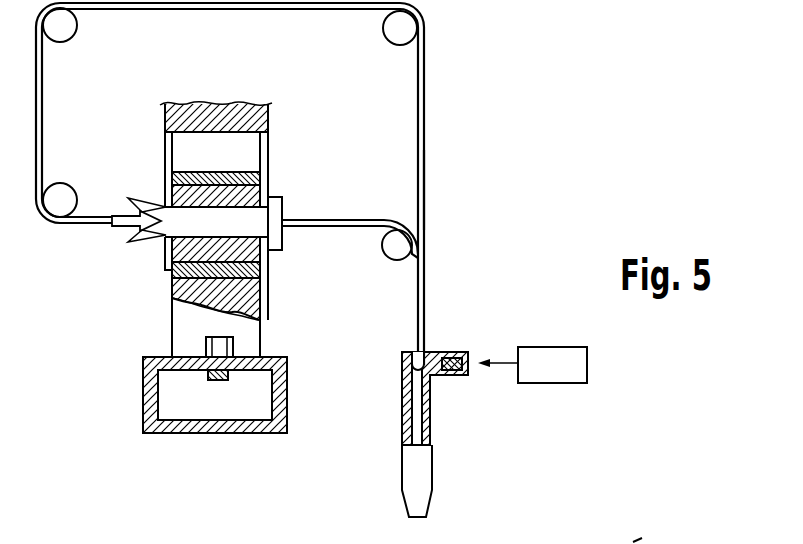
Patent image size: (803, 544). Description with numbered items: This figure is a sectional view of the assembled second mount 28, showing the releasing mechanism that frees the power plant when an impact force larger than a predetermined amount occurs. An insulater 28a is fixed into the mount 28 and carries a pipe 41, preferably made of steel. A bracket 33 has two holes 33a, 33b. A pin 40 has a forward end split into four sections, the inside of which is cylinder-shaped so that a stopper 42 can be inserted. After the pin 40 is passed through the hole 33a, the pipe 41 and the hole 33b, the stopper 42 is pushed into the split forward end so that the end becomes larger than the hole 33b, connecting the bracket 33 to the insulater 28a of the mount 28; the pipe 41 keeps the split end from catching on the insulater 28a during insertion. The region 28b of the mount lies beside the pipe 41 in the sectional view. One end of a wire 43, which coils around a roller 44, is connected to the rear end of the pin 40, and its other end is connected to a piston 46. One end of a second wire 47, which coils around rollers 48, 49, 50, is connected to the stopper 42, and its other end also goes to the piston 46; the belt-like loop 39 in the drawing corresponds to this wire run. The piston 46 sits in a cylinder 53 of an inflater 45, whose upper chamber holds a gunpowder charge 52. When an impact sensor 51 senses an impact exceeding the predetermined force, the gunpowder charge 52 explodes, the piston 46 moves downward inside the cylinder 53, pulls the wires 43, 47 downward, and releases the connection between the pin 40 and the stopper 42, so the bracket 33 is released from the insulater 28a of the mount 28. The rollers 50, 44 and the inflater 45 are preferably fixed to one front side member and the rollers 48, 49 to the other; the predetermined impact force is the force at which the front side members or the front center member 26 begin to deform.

The front center member 26 is at (163, 434).
The mount 28 is at (182, 330).
The insulater 28a is at (264, 272).
The upper guide cavity 28b is at (196, 170).
The bracket 33 is at (270, 108).
The hole 33a is at (268, 184).
The hole 33b is at (165, 250).
The endless belt 39 is at (432, 166).
The pin 40 is at (283, 205).
The pipe 41 is at (170, 181).
The stopper 42 is at (121, 228).
The wire 43 is at (346, 228).
The roller 44 is at (394, 261).
The inflater 45 is at (404, 353).
The piston 46 is at (405, 384).
The wire 47 is at (424, 187).
The roller 48 is at (64, 192).
The roller 49 is at (70, 40).
The roller 50 is at (398, 37).
The impact sensor 51 is at (546, 355).
The gunpowder charge 52 is at (455, 376).
The cylinder 53 is at (405, 430).